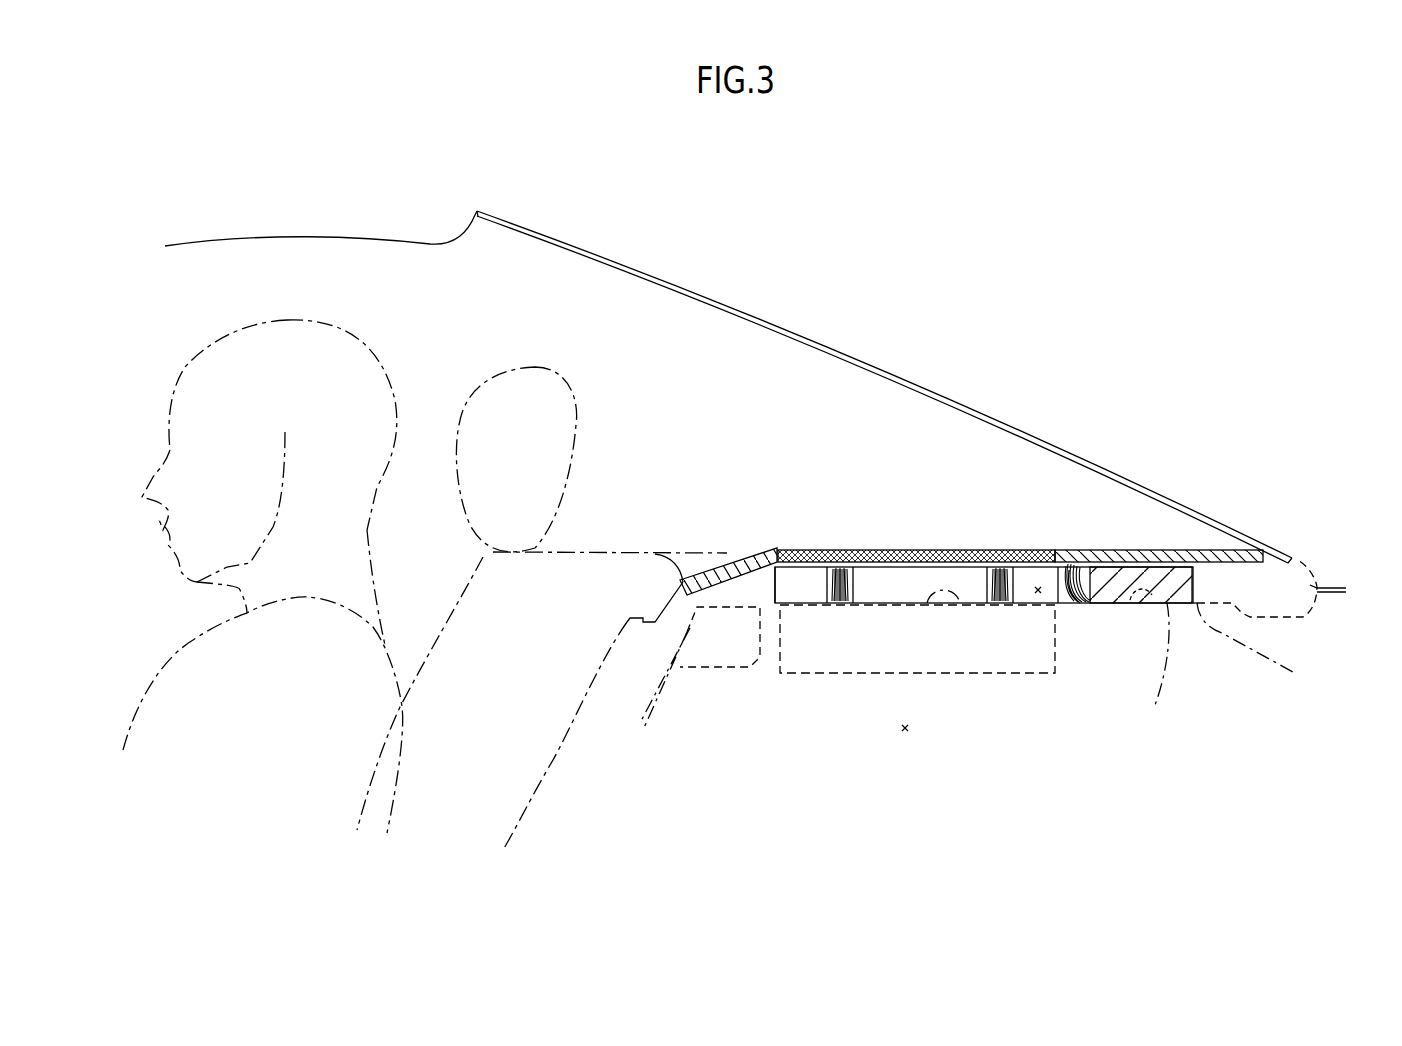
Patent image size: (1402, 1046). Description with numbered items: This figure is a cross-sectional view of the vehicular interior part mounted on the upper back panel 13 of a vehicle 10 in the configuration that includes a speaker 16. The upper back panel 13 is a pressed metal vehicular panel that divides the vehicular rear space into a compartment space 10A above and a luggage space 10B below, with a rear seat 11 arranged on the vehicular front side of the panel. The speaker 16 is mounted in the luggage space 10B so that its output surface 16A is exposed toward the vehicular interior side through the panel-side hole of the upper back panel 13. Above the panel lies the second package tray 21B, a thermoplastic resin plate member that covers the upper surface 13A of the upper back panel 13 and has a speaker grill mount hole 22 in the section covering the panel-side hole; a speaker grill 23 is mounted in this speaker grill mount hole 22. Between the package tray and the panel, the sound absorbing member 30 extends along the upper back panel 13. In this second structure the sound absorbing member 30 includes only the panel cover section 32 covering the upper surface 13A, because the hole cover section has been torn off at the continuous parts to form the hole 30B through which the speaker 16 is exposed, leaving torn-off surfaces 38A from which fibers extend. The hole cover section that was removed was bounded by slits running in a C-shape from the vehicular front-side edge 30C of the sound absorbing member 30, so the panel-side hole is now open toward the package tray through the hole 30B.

The vehicle 10 is at (937, 330).
The compartment space 10A is at (775, 373).
The luggage space 10B is at (905, 730).
The rear seat 11 is at (555, 760).
The upper back panel 13 is at (1259, 647).
The upper surface of the upper back panel 13A is at (1157, 671).
The speaker 16 is at (830, 673).
The output surface 16A is at (975, 605).
The second package tray 21B is at (771, 548).
The speaker grill mount hole 22 is at (1049, 548).
The speaker grill 23 is at (923, 548).
The sound absorbing member 30 is at (1120, 590).
The hole 30B is at (1039, 592).
The vehicular front-side edge 30C is at (775, 588).
The panel cover section 32 is at (1120, 590).
The torn-off surface 38A is at (840, 567).